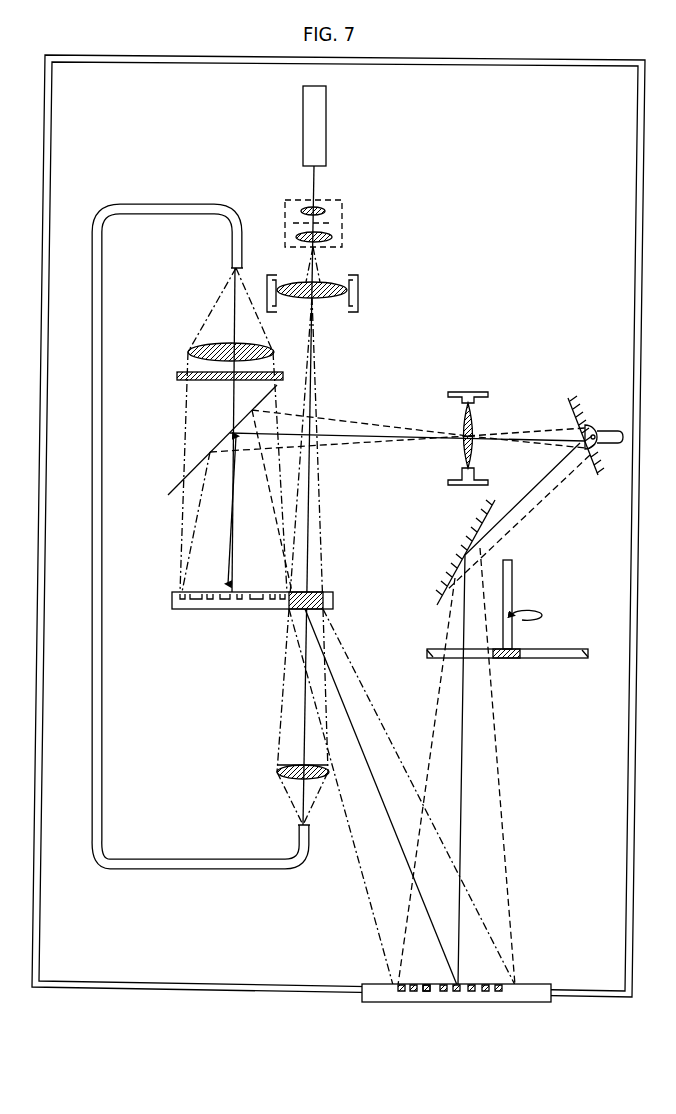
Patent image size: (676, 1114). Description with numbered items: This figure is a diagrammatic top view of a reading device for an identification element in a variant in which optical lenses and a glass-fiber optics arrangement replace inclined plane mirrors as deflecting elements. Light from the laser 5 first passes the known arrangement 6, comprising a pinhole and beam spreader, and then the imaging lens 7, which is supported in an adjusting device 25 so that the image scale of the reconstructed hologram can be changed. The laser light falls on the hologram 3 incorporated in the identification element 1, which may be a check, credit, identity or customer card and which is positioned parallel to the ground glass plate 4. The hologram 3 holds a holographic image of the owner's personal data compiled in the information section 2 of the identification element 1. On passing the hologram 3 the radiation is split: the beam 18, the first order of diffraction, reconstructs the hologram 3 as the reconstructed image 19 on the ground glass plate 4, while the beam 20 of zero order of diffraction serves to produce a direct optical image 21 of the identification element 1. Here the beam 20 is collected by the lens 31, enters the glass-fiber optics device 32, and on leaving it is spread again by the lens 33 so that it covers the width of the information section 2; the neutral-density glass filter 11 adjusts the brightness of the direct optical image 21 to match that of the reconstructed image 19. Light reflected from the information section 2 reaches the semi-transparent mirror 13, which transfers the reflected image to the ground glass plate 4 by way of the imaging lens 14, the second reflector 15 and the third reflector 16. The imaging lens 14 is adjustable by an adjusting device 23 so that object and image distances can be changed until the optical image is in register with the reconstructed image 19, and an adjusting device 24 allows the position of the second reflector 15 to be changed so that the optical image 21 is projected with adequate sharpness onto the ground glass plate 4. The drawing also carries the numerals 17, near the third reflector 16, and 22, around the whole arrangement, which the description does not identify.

The identification element 1 is at (205, 612).
The information section 2 is at (202, 592).
The hologram 3 is at (296, 613).
The ground glass plate 4 is at (372, 990).
The laser 5 is at (318, 152).
The arrangement with pinhole and beam spreader 6 is at (342, 218).
The imaging lens 7 is at (350, 288).
The neutral-density glass filter 11 is at (180, 378).
The semi-transparent mirror 13 is at (200, 462).
The imaging lens 14 is at (476, 424).
The second reflector 15 is at (579, 404).
The third reflector 16 is at (459, 552).
The mirror support platform 17 is at (540, 660).
The beam 18 is at (370, 897).
The reconstructed image 19 is at (425, 991).
The beam of zero order of diffraction 20 is at (278, 550).
The direct optical image 21 is at (428, 984).
The housing 22 is at (632, 780).
The adjusting device 23 is at (466, 390).
The adjusting device 24 is at (608, 432).
The adjusting device 25 is at (353, 307).
The lens 31 is at (284, 779).
The glass-fiber optics arrangement 32 is at (95, 757).
The lens 33 is at (204, 340).